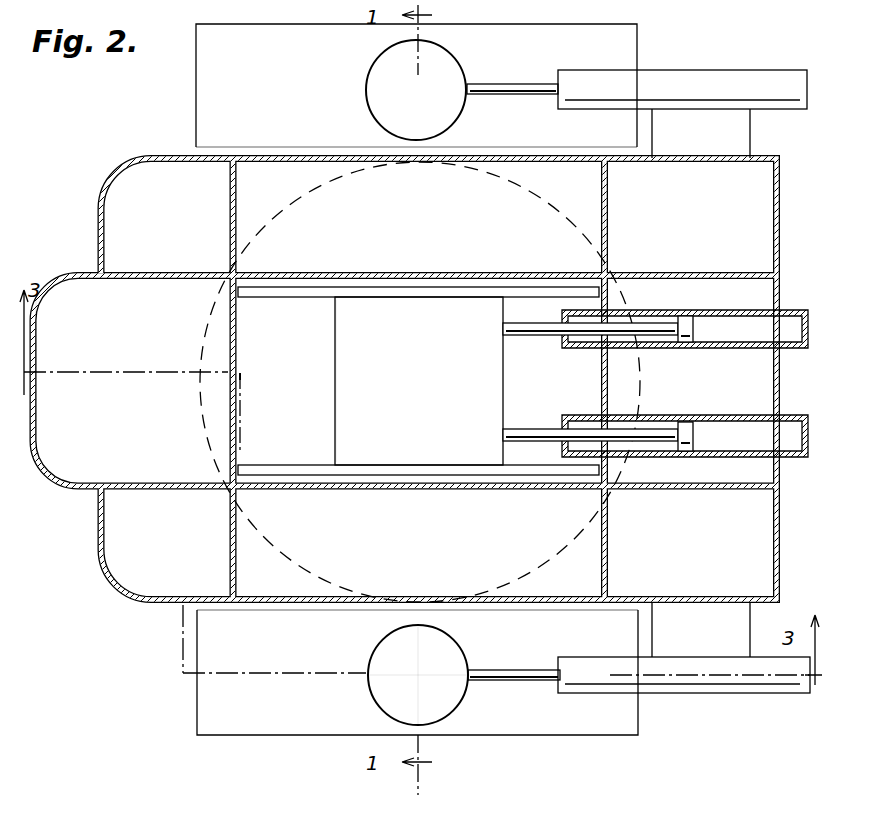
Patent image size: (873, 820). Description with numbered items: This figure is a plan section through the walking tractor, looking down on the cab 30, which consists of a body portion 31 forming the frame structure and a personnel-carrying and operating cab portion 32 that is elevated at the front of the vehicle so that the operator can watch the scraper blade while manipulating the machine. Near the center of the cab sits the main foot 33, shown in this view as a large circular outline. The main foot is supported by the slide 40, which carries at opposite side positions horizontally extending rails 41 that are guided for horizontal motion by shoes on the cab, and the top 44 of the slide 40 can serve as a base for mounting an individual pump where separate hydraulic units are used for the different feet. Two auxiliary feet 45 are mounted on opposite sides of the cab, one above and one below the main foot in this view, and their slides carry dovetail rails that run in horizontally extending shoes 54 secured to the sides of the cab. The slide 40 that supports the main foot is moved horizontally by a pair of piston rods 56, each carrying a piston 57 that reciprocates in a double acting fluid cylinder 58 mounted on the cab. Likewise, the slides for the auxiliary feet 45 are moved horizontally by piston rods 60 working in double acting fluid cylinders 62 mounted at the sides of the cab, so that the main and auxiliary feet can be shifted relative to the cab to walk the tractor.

The cab 30 is at (693, 178).
The body portion 31 is at (602, 197).
The cab portion 32 is at (126, 380).
The main foot 33 is at (512, 585).
The slide 40 is at (470, 324).
The rails 41 is at (570, 290).
The top of the slide 44 is at (465, 432).
The auxiliary feet 45 is at (620, 56).
The shoes 54 is at (470, 162).
The piston rods 56 is at (527, 432).
The pistons 57 is at (685, 320).
The double acting fluid cylinders 58 is at (750, 330).
The piston rods 60 is at (515, 678).
The double acting fluid cylinders 62 is at (736, 688).